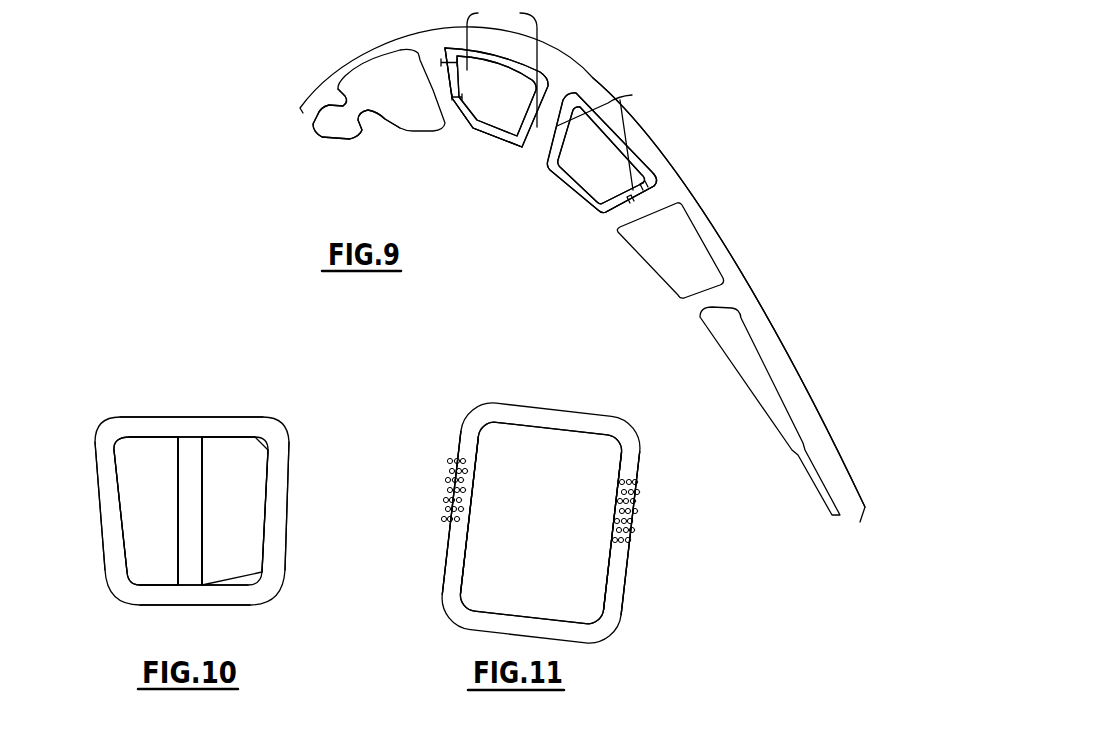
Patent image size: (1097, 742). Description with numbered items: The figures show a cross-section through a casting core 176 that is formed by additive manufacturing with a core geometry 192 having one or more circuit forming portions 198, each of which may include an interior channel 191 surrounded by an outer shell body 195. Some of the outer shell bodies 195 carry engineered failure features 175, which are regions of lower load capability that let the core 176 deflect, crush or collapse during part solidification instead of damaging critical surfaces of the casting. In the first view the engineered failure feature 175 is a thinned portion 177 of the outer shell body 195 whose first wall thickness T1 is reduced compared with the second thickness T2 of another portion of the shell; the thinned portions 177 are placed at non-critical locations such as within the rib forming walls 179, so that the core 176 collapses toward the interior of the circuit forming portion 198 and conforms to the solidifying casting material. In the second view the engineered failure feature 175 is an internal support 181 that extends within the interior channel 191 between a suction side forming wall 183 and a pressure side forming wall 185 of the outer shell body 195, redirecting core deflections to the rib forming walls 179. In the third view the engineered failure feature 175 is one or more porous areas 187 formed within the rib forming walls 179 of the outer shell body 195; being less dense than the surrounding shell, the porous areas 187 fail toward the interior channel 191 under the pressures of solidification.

In FIG. 9, the engineered failure feature 175 is at (440, 92).
In FIG. 10, the engineered failure feature 175 is at (224, 470).
In FIG. 11, the engineered failure feature 175 is at (436, 472).
In FIG. 9, the core 176 is at (677, 112).
In FIG. 9, the thinned portion 177 is at (632, 95).
In FIG. 9, the rib forming wall 179 is at (473, 130).
In FIG. 10, the rib forming wall 179 is at (278, 477).
In FIG. 11, the rib forming wall 179 is at (448, 560).
In FIG. 10, the internal support 181 is at (190, 448).
In FIG. 10, the suction side forming wall 183 is at (146, 428).
In FIG. 10, the pressure side forming wall 185 is at (163, 596).
In FIG. 11, the porous area 187 is at (452, 498).
In FIG. 9, the interior channel 191 is at (518, 99).
In FIG. 10, the interior channel 191 is at (167, 511).
In FIG. 11, the interior channel 191 is at (560, 521).
In FIG. 9, the core geometry 192 is at (594, 82).
In FIG. 9, the outer shell body 195 is at (482, 138).
In FIG. 10, the outer shell body 195 is at (297, 521).
In FIG. 11, the outer shell body 195 is at (550, 411).
In FIG. 9, the circuit forming portion 198 is at (381, 134).
In FIG. 9, the first wall thickness T1 is at (457, 101).
In FIG. 9, the second thickness T2 is at (447, 57).